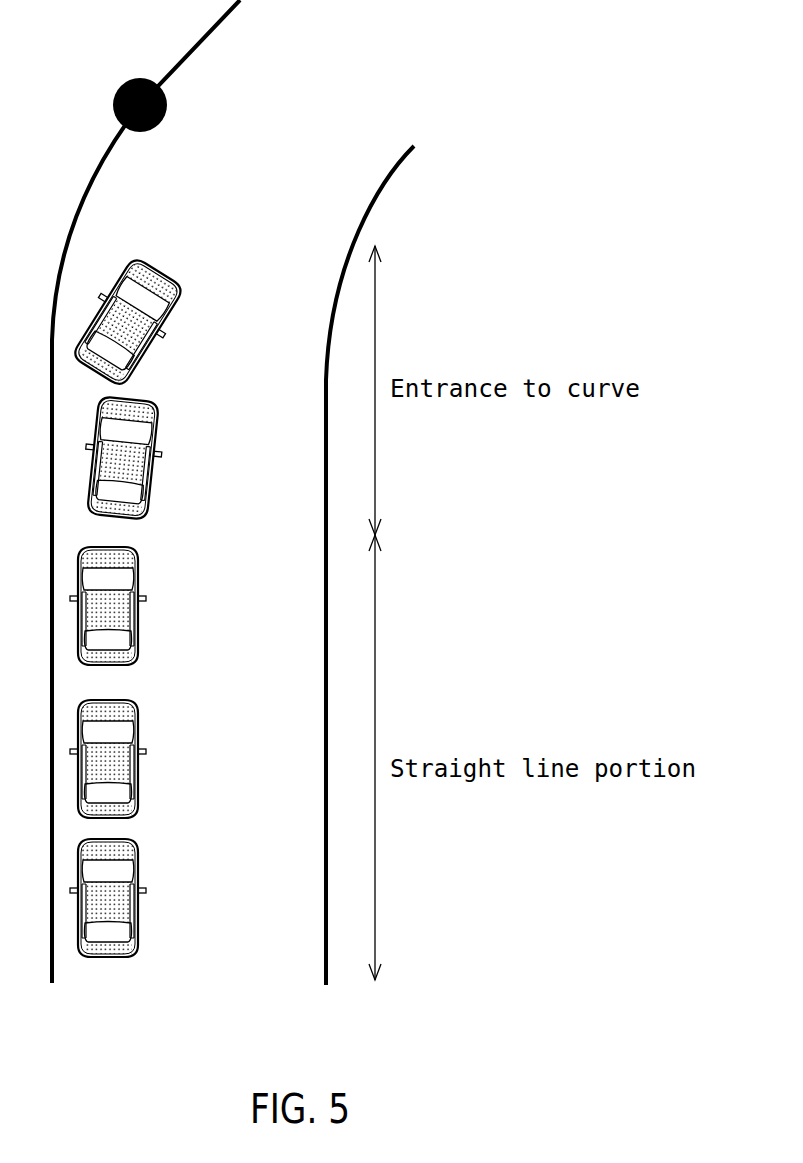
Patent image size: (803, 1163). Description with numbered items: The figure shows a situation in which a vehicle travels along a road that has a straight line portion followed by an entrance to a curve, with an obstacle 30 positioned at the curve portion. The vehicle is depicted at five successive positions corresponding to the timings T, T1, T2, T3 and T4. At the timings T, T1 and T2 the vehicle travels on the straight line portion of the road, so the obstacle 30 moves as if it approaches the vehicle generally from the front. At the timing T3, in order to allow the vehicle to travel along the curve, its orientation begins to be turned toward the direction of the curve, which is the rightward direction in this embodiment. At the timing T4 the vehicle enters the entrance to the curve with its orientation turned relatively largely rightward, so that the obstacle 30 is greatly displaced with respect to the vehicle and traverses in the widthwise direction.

The obstacle 30 is at (114, 98).
The timing T4 is at (178, 290).
The timing T3 is at (152, 472).
The timing T2 is at (140, 620).
The timing T1 is at (140, 772).
The timing T is at (140, 912).